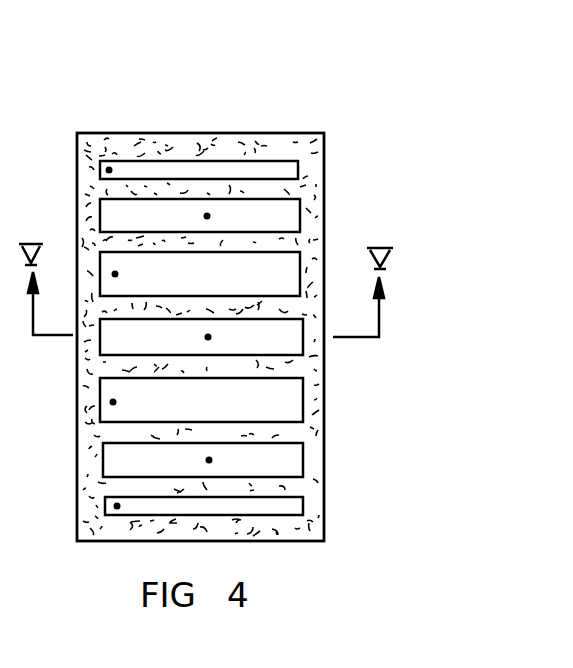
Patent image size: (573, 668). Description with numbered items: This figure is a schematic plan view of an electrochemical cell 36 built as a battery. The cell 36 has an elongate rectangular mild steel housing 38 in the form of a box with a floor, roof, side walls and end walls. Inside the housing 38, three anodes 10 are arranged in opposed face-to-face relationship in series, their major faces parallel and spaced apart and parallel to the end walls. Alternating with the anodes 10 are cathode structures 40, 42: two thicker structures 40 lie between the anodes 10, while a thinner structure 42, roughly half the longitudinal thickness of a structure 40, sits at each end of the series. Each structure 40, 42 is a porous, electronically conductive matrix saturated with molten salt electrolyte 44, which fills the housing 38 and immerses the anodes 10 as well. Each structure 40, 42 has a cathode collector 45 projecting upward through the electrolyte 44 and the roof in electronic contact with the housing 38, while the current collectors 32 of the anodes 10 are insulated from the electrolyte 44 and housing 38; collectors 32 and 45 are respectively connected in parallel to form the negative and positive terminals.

The electrochemical cell 36 is at (336, 58).
The housing 38 is at (138, 132).
The cathode structure 42 is at (250, 171).
The current collector 32 is at (207, 212).
The anode 10 is at (328, 195).
The cathode structure 40 is at (283, 275).
The electrolyte 44 is at (289, 245).
The cathode collector 45 is at (96, 263).